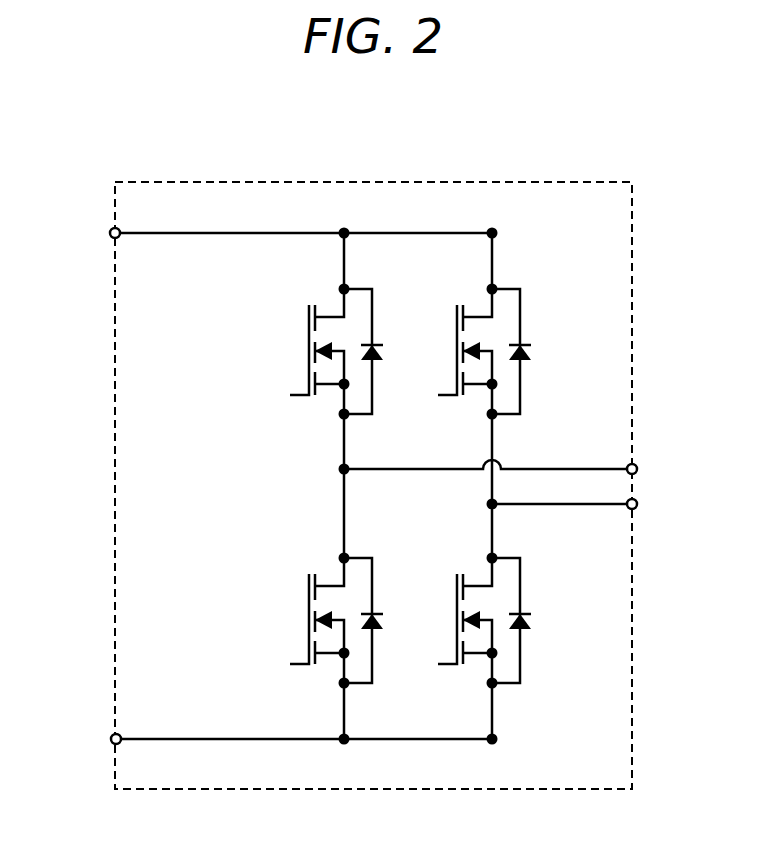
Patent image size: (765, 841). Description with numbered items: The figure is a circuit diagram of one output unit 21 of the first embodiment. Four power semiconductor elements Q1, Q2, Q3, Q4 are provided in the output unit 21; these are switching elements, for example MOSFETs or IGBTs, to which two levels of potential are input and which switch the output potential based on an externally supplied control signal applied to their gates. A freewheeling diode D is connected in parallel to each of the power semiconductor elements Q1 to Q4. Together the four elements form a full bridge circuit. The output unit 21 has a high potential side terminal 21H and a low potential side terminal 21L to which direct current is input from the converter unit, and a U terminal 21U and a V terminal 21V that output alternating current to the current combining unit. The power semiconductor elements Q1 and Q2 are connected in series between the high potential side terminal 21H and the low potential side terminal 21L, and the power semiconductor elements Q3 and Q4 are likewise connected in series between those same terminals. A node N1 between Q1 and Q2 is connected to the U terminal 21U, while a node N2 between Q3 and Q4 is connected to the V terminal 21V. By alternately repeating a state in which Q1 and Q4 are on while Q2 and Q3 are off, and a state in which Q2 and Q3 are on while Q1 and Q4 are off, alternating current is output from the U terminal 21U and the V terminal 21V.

The output unit 21 is at (586, 182).
The high potential side terminal 21H is at (111, 230).
The low potential side terminal 21L is at (111, 737).
The U terminal 21U is at (637, 465).
The V terminal 21V is at (637, 508).
The node N1 is at (338, 469).
The node N2 is at (487, 504).
The power semiconductor element Q1 is at (311, 352).
The power semiconductor element Q2 is at (311, 621).
The power semiconductor element Q3 is at (466, 352).
The power semiconductor element Q4 is at (466, 621).
The freewheeling diode D is at (458, 488).